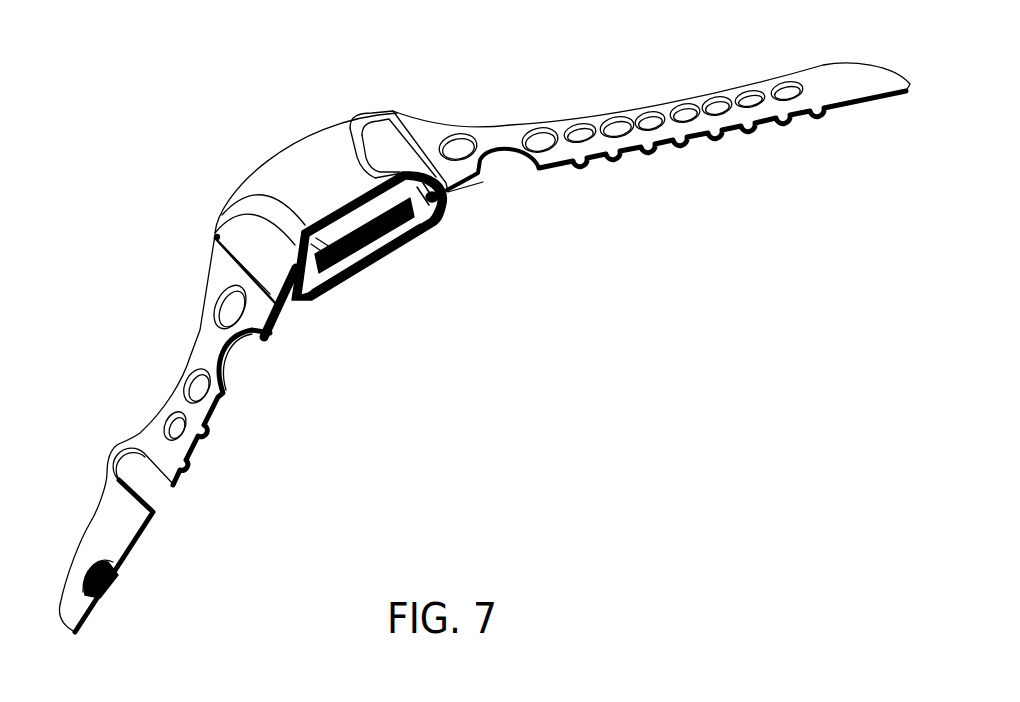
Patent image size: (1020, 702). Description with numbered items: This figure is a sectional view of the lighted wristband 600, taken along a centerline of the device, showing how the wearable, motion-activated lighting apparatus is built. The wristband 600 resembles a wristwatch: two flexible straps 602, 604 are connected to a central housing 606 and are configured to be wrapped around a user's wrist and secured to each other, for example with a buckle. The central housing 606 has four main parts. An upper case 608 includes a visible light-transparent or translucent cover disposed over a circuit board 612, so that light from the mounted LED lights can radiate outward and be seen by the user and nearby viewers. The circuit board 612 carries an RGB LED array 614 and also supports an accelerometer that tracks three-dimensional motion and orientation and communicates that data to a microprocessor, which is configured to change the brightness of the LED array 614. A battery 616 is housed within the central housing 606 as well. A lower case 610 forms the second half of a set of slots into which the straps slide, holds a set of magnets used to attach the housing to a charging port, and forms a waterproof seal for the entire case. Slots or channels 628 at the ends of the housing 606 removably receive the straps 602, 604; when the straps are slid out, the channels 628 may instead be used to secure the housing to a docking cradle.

The lighted wristband 600 is at (168, 194).
The flexible strap 602 is at (128, 541).
The flexible strap 604 is at (730, 130).
The central housing 606 is at (296, 98).
The upper case 608 is at (336, 173).
The lower case 610 is at (420, 232).
The circuit board 612 is at (362, 243).
The RGB LED array 614 is at (428, 212).
The battery 616 is at (370, 245).
The slots or channels 628 is at (296, 315).